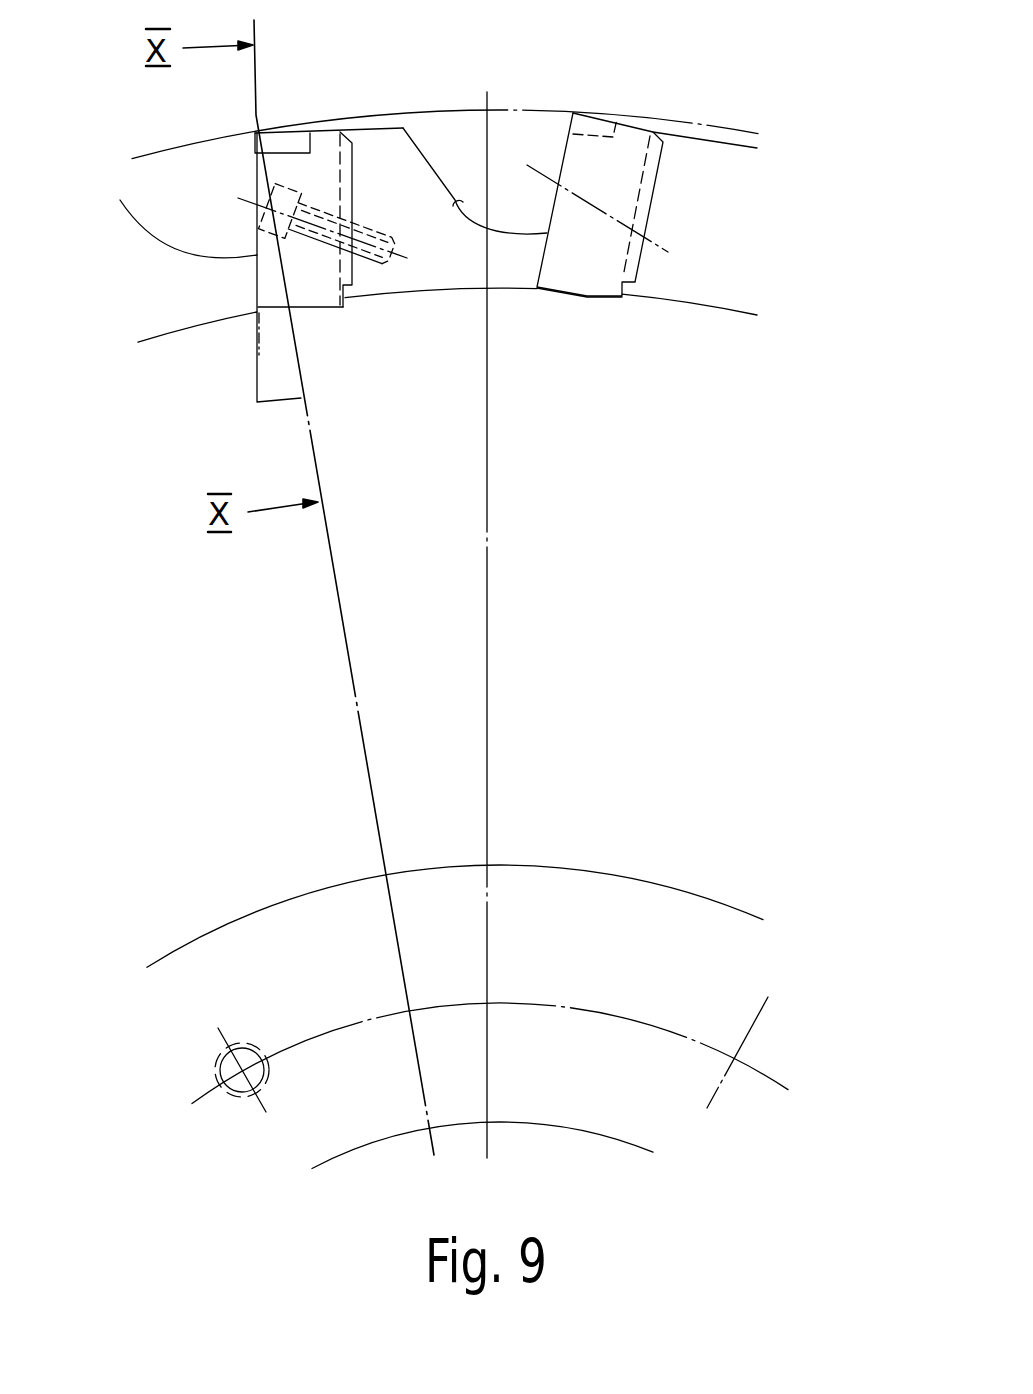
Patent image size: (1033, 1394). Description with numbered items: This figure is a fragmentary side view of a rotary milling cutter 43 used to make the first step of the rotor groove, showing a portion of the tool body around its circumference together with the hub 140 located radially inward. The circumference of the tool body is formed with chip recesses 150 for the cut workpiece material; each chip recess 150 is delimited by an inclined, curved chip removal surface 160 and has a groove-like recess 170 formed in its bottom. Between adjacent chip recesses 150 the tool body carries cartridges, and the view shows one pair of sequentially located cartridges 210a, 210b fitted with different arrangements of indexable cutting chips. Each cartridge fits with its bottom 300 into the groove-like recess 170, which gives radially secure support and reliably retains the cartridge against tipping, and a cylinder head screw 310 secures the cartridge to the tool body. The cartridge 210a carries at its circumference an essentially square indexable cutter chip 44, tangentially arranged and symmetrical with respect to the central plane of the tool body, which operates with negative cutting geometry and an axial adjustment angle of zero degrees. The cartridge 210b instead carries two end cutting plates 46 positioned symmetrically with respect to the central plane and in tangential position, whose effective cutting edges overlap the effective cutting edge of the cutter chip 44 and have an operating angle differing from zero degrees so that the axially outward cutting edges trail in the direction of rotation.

The rotary milling cutter 43 is at (521, 82).
The indexable cutter chip 44 is at (582, 110).
The end cutting plates 46 is at (273, 138).
The hub 140 is at (663, 910).
The chip recesses 150 is at (435, 142).
The chip removal surface 160 is at (465, 215).
The groove-like recess 170 is at (585, 297).
The cartridge 210a is at (632, 157).
The cartridge 210b is at (333, 143).
The bottom 300 is at (320, 287).
The cylinder head screw 310 is at (288, 197).